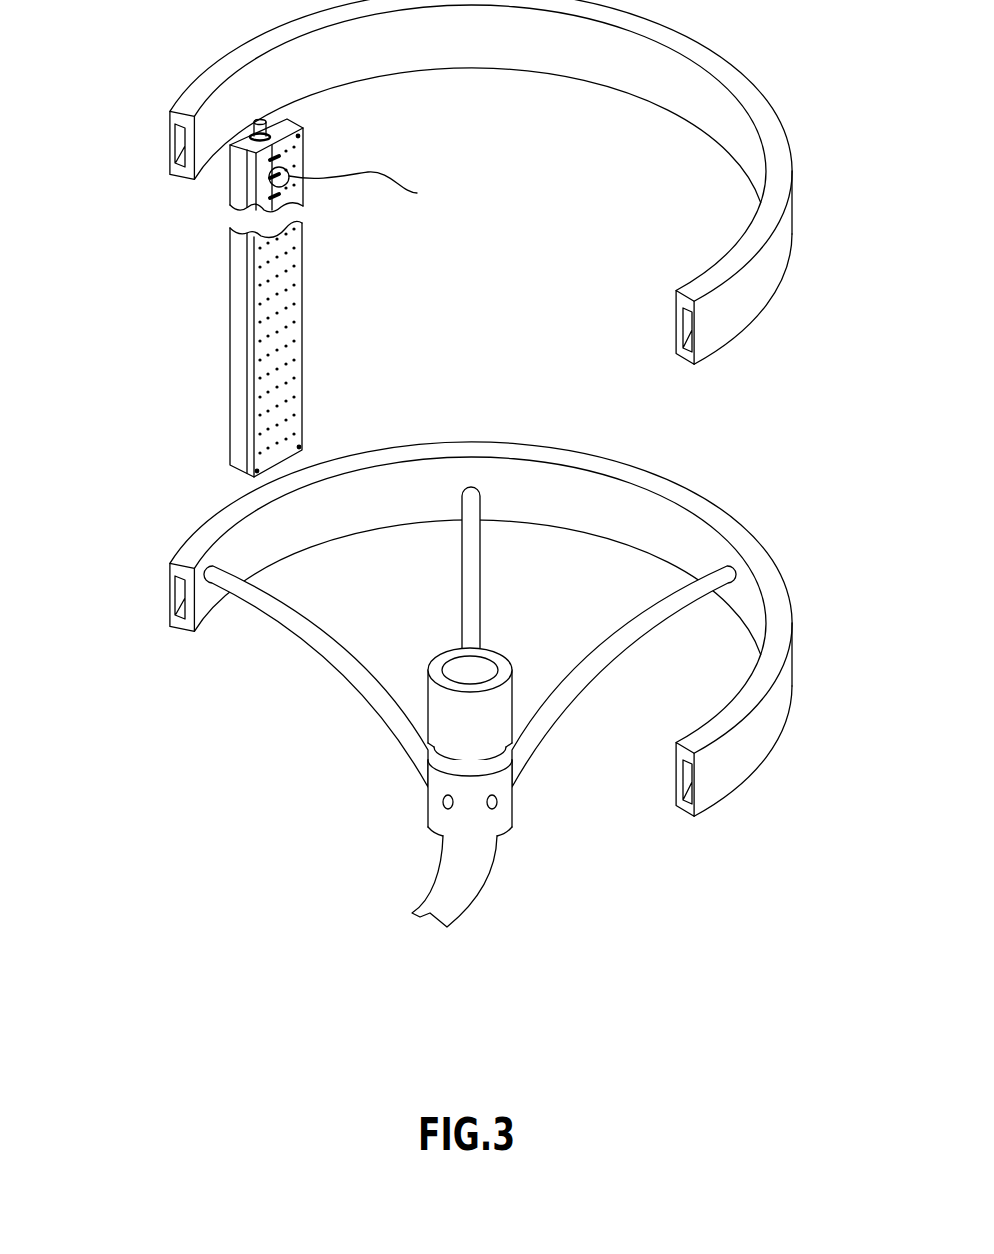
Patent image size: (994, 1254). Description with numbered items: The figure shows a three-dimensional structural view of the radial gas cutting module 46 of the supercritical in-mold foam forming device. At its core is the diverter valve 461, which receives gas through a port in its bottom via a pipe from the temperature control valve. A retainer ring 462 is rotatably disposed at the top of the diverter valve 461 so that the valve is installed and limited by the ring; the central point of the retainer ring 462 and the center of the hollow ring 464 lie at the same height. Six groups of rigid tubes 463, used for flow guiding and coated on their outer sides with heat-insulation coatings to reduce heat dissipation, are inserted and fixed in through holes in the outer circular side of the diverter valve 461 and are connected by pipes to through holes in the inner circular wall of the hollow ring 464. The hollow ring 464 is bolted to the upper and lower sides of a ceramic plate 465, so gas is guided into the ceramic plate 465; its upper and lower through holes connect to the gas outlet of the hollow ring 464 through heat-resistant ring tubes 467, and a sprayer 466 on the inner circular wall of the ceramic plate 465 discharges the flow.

The radial gas cutting module 46 is at (617, 512).
The diverter valve 461 is at (437, 810).
The retainer ring 462 is at (463, 718).
The rigid tubes 463 is at (307, 627).
The hollow ring 464 is at (738, 765).
The ceramic plate 465 is at (230, 297).
The sprayer 466 is at (258, 350).
The heat-resistant ring tubes 467 is at (256, 125).